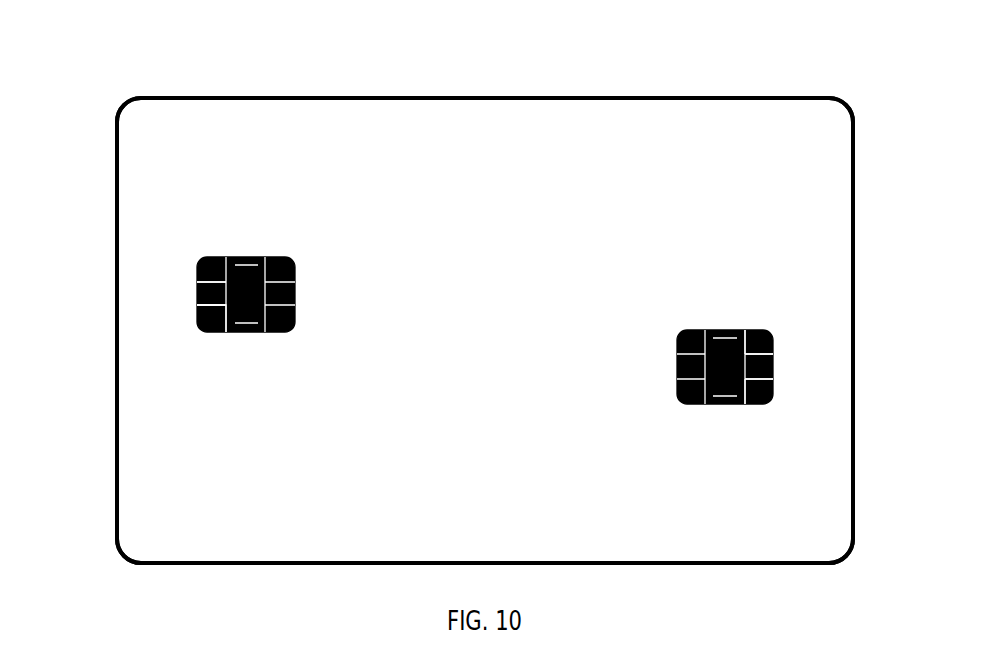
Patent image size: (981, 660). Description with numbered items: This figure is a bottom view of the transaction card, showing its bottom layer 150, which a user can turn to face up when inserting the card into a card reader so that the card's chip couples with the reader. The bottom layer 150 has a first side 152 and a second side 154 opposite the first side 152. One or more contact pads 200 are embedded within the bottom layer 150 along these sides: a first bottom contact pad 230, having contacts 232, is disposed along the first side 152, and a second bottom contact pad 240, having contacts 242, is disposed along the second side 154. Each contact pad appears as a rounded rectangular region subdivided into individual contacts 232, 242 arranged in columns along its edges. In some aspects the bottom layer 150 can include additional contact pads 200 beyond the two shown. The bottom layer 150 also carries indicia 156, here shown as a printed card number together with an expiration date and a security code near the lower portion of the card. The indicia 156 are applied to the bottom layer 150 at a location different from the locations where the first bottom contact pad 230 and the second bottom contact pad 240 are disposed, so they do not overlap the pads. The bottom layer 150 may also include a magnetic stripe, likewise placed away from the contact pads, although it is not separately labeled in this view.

The bottom layer 150 is at (817, 172).
The first side 152 is at (157, 218).
The second side 154 is at (813, 315).
The indicia 156 is at (190, 499).
The contact pads 200 is at (245, 264).
The first bottom contact pad 230 is at (197, 287).
The contacts 232 is at (208, 313).
The second bottom contact pad 240 is at (772, 342).
The contacts 242 is at (763, 388).